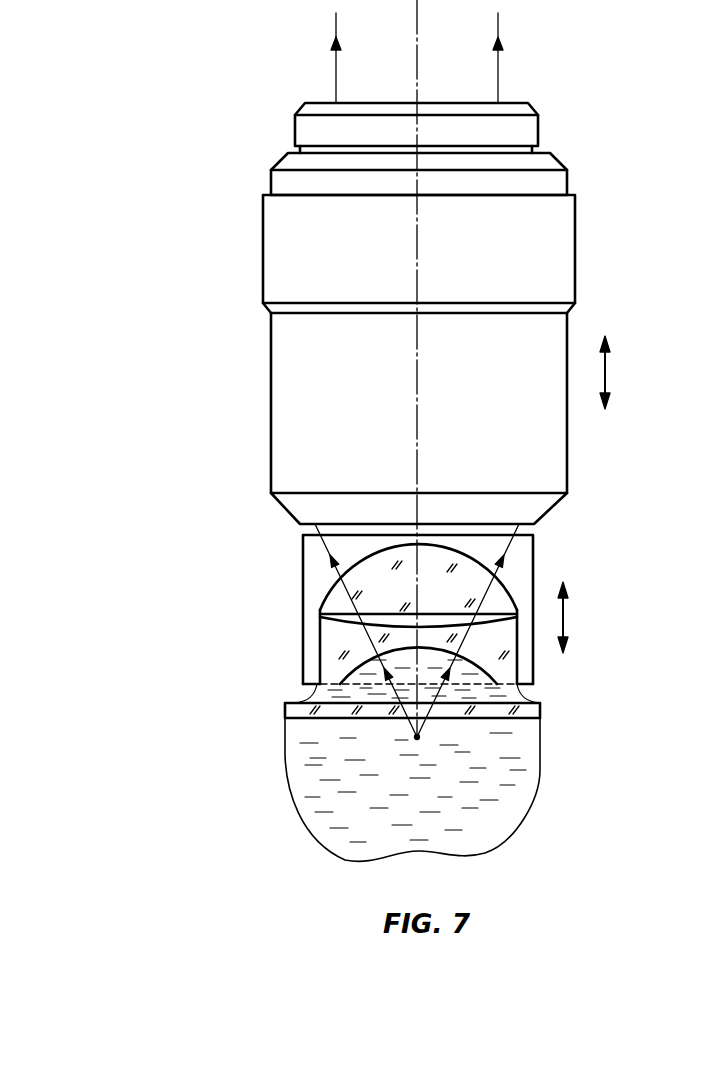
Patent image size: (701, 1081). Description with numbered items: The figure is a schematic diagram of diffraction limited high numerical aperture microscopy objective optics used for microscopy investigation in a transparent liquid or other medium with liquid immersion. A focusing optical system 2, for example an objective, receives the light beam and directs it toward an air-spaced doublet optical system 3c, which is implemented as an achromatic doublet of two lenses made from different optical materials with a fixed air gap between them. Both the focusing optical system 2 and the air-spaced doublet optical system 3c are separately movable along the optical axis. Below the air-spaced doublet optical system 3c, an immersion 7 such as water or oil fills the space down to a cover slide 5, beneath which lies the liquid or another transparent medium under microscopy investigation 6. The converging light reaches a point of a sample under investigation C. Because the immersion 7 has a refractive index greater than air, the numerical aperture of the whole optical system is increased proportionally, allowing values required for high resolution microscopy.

The focusing optical system 2 is at (263, 268).
The air-spaced doublet optical system 3c is at (302, 612).
The immersion 7 is at (315, 702).
The cover slide 5 is at (293, 709).
The liquid or another transparent medium under microscopy investigation 6 is at (313, 807).
The point of a sample under investigation C is at (420, 737).